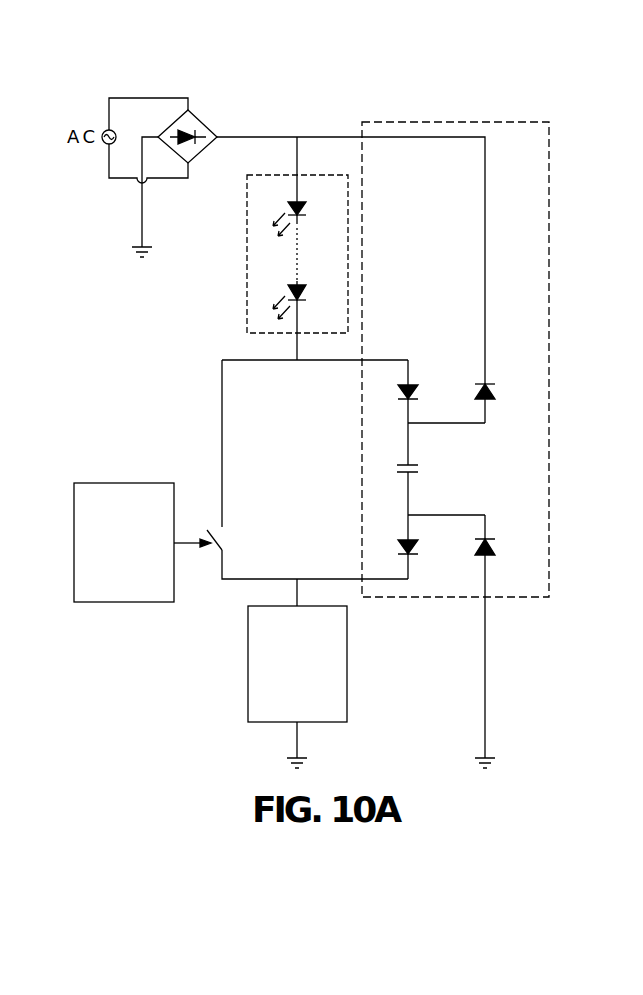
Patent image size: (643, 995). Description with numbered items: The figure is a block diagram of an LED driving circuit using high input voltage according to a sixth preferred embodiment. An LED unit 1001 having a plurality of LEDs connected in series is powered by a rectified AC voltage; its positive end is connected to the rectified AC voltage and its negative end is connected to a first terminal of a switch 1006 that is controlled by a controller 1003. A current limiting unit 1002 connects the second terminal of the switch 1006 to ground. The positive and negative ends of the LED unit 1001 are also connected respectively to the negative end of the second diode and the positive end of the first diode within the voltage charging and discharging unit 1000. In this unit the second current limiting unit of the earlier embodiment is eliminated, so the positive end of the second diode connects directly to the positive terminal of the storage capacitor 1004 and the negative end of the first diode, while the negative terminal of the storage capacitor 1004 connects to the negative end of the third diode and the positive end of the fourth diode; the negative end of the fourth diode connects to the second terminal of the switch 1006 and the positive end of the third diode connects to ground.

The voltage charging and discharging unit 1000 is at (461, 440).
The LED unit 1001 is at (247, 254).
The current limiting unit 1002 is at (247, 663).
The controller 1003 is at (123, 483).
The storage capacitor 1004 is at (397, 460).
The switch 1006 is at (230, 538).